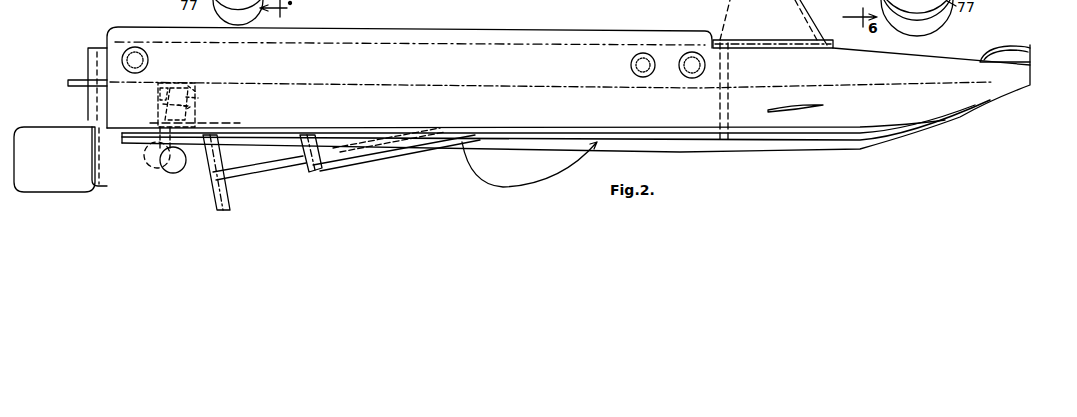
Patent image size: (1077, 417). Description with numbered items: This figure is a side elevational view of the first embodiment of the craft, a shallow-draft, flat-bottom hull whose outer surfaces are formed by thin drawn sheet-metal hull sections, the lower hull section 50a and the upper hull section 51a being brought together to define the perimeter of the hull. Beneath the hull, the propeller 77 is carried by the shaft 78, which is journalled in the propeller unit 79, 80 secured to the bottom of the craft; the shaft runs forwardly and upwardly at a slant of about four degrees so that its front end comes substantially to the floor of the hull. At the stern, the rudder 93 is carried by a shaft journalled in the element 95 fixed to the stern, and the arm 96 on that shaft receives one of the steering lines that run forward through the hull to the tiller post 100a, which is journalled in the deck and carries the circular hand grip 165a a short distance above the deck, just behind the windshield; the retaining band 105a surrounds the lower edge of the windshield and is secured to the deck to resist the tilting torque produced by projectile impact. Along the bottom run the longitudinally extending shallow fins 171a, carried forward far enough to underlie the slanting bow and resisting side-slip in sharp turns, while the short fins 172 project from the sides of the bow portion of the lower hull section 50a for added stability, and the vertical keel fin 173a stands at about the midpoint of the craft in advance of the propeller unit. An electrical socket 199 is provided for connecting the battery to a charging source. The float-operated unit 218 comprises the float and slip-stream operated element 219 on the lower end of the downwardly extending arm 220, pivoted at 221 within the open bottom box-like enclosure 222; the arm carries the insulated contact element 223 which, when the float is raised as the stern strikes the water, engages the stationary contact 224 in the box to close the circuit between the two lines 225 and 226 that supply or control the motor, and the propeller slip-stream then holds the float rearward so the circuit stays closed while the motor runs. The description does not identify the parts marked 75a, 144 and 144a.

The lower hull section 50a is at (669, 126).
The upper hull section 51a is at (550, 57).
The deck edge 75a is at (490, 32).
The propeller 77 is at (212, 200).
The shaft 78 is at (266, 172).
The propeller unit 79 is at (306, 171).
The propeller unit 80 is at (353, 163).
The rudder 93 is at (62, 138).
The element 95 is at (88, 77).
The arm 96 is at (68, 84).
The tiller post 100a is at (722, 88).
The retaining band 105a is at (830, 45).
The fastener 144 is at (133, 55).
The fastener 144a is at (689, 53).
The hand grip 165a is at (728, 40).
The longitudinally extending shallow fins 171a is at (713, 145).
The short fins 172 is at (805, 111).
The vertical keel fin 173a is at (545, 162).
The electrical socket 199 is at (641, 54).
The unit 218 is at (163, 81).
The float and slip-stream operated element 219 is at (175, 165).
The downwardly extending arm 220 is at (196, 124).
The pivot 221 is at (192, 107).
The open bottom box-like enclosure 222 is at (162, 108).
The contact element 223 is at (177, 92).
The stationary contact 224 is at (158, 92).
The line 225 is at (210, 89).
The line 226 is at (216, 98).